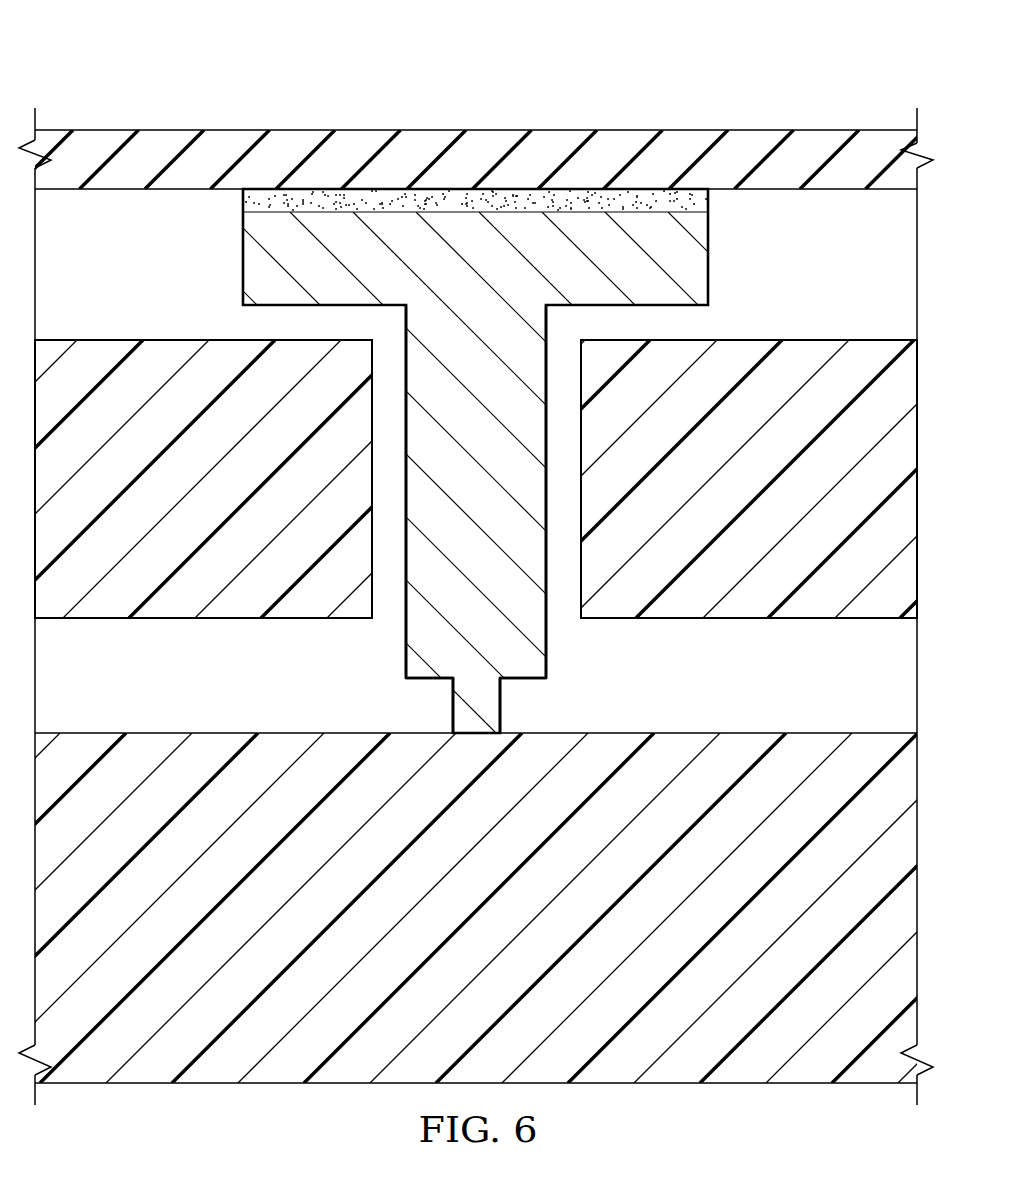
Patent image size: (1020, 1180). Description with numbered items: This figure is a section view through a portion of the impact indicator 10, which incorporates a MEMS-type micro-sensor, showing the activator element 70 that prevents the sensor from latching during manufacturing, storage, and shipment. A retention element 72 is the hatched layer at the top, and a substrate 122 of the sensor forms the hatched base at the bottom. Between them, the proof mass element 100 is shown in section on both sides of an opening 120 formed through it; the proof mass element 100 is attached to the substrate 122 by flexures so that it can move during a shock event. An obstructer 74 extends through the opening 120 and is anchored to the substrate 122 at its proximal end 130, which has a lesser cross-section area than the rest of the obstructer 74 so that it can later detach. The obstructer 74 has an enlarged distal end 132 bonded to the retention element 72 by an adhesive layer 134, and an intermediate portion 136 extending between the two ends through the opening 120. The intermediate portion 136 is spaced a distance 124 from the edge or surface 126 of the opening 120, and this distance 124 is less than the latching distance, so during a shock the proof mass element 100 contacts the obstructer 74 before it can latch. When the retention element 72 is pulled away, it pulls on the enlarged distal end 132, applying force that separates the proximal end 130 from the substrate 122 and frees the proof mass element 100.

The activator element 70 is at (166, 76).
The retention element 72 is at (95, 142).
The impact indicator 10 is at (103, 666).
The obstructer 74 is at (539, 662).
The proof mass element 100 is at (812, 348).
The opening 120 is at (380, 630).
The substrate 122 is at (217, 1073).
The distance 124 is at (440, 499).
The edge or surface of opening 126 is at (361, 401).
The proximal end 130 is at (462, 716).
The enlarged distal end 132 is at (228, 252).
The adhesive layer 134 is at (706, 200).
The intermediate portion 136 is at (566, 454).